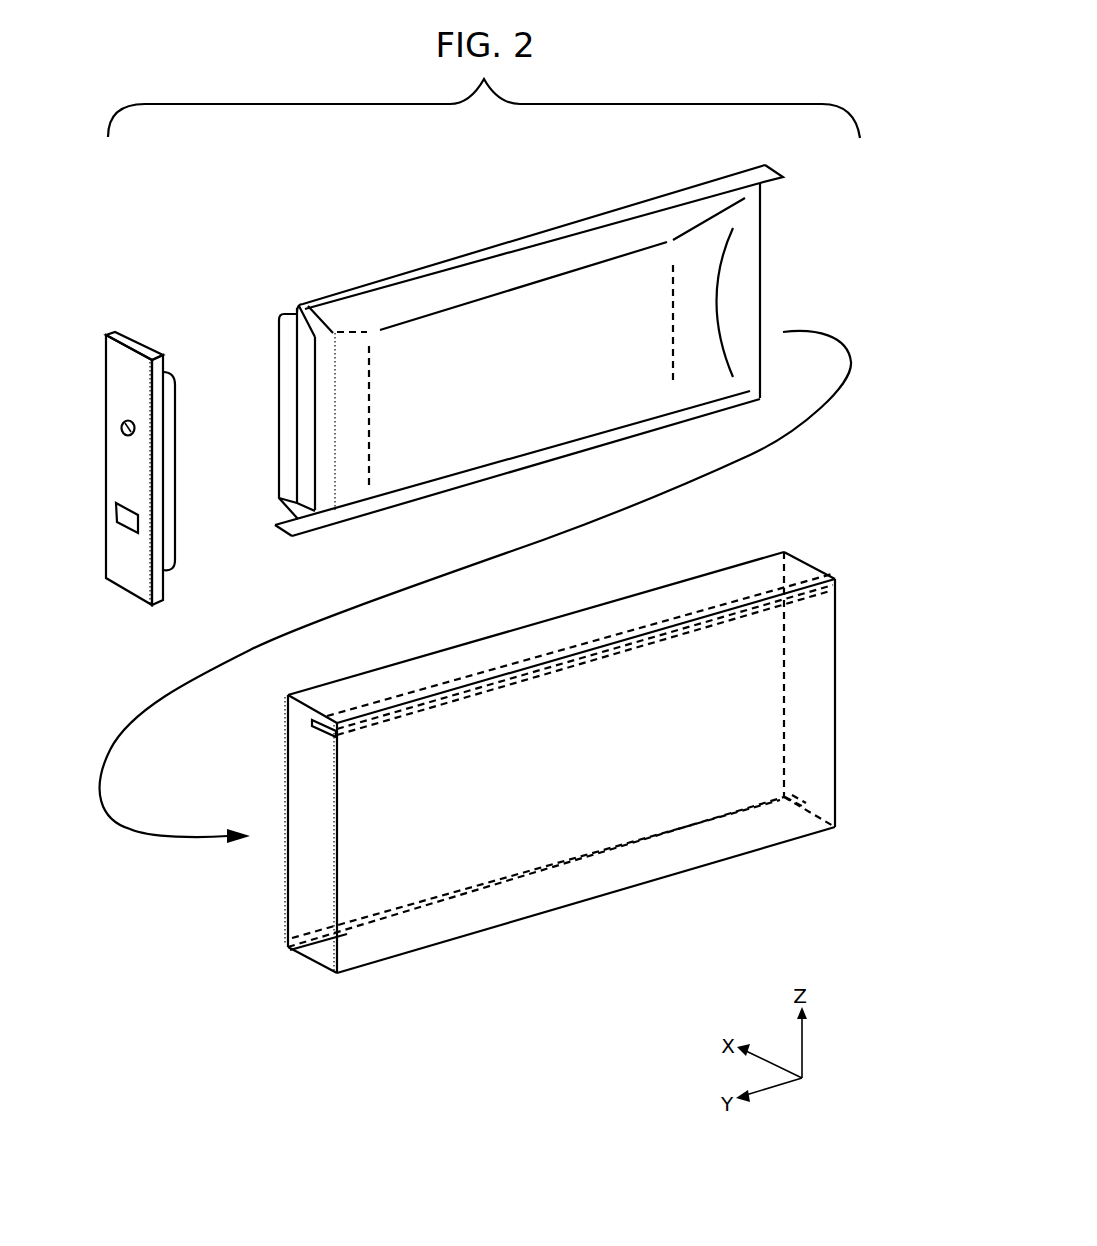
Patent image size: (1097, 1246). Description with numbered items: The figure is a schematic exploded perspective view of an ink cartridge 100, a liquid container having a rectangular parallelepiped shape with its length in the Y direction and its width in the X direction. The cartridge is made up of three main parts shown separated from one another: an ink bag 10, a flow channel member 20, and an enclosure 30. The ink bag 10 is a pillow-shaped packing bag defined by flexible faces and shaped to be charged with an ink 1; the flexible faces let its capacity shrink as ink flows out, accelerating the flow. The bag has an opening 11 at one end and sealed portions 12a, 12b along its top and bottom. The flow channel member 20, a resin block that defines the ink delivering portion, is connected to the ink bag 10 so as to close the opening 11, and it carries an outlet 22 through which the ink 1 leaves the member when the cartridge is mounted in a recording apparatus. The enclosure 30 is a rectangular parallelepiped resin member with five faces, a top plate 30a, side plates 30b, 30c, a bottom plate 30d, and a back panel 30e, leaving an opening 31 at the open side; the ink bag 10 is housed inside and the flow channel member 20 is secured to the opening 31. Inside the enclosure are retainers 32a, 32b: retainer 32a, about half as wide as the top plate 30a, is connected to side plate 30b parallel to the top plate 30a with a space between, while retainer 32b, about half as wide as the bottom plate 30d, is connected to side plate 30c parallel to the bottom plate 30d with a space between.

The ink cartridge 100 is at (216, 248).
The ink 1 is at (581, 400).
The ink bag 10 is at (496, 357).
The opening 11 is at (287, 382).
The sealed portion 12a is at (400, 280).
The sealed portion 12b is at (282, 527).
The flow channel member 20 is at (157, 441).
The outlet 22 is at (130, 438).
The enclosure 30 is at (531, 742).
The top plate 30a is at (640, 605).
The side plate 30b is at (653, 790).
The side plate 30c is at (700, 573).
The bottom plate 30d is at (317, 964).
The back panel 30e is at (837, 795).
The opening 31 is at (288, 774).
The retainer 32a is at (583, 645).
The retainer 32b is at (483, 905).